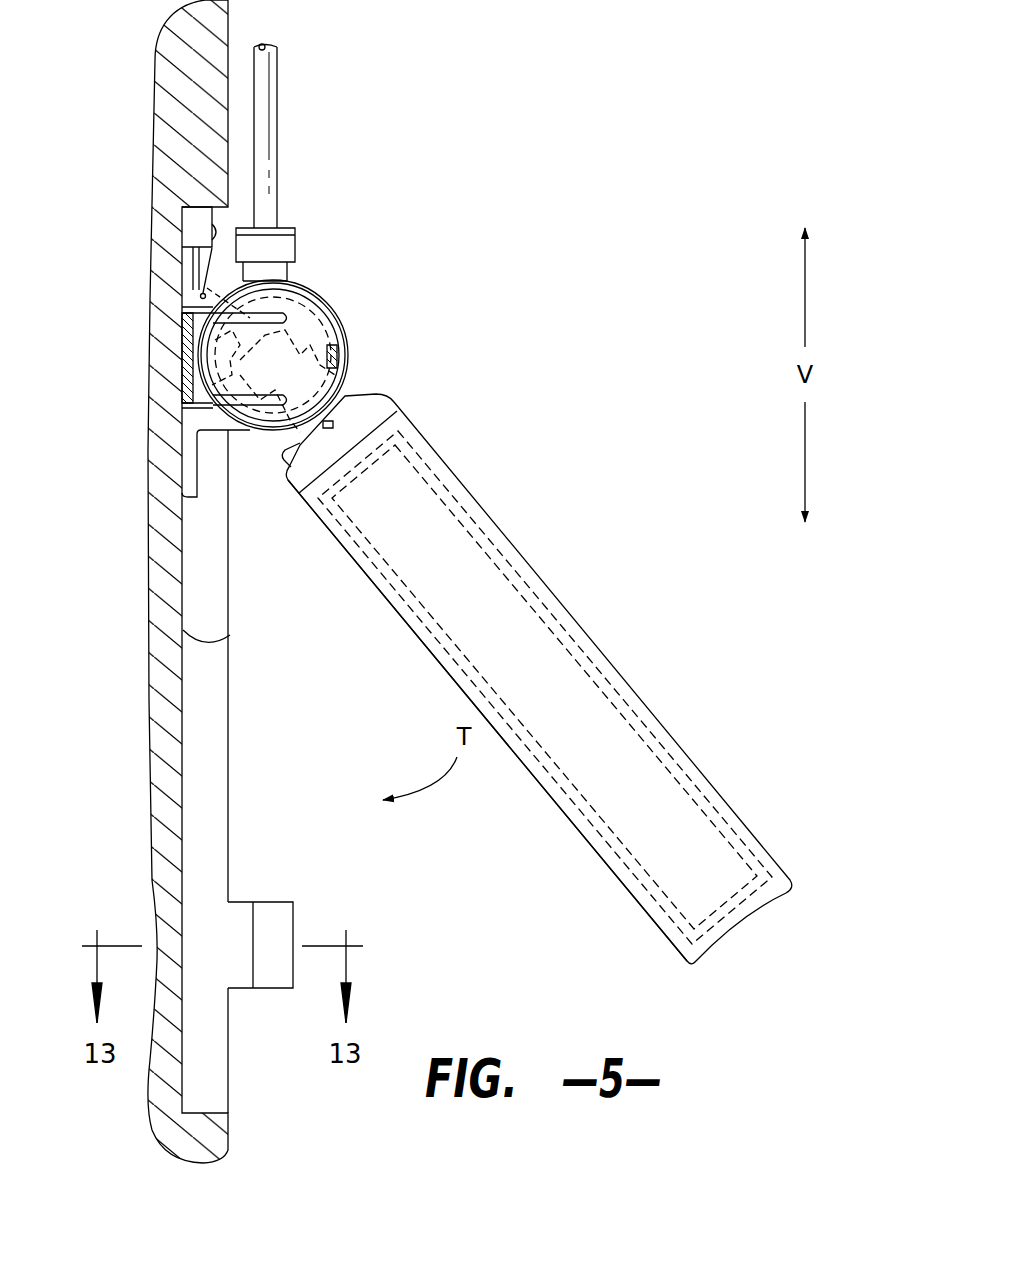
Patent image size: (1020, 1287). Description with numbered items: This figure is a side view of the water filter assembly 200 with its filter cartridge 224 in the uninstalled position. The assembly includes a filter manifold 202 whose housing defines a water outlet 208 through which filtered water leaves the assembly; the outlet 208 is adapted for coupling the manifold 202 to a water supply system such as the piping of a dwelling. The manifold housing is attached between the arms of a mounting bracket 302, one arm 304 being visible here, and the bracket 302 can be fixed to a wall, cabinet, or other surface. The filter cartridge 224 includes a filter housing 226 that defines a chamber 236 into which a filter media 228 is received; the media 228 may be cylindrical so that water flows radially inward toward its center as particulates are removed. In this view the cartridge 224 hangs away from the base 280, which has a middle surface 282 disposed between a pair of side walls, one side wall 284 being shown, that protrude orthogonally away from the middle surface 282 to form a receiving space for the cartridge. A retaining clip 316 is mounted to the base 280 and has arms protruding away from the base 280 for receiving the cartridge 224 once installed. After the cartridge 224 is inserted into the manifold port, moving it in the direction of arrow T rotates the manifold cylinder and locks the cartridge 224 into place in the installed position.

The water filter assembly 200 is at (582, 283).
The filter manifold 202 is at (387, 267).
The water outlet 208 is at (268, 112).
The filter cartridge 224 is at (631, 657).
The filter housing 226 is at (677, 733).
The filter media 228 is at (485, 548).
The chamber 236 is at (462, 500).
The base 280 is at (163, 133).
The middle surface 282 is at (200, 640).
The side wall 284 is at (212, 740).
The mounting bracket 302 is at (192, 417).
The arm 304 is at (327, 320).
The retaining clip 316 is at (275, 920).